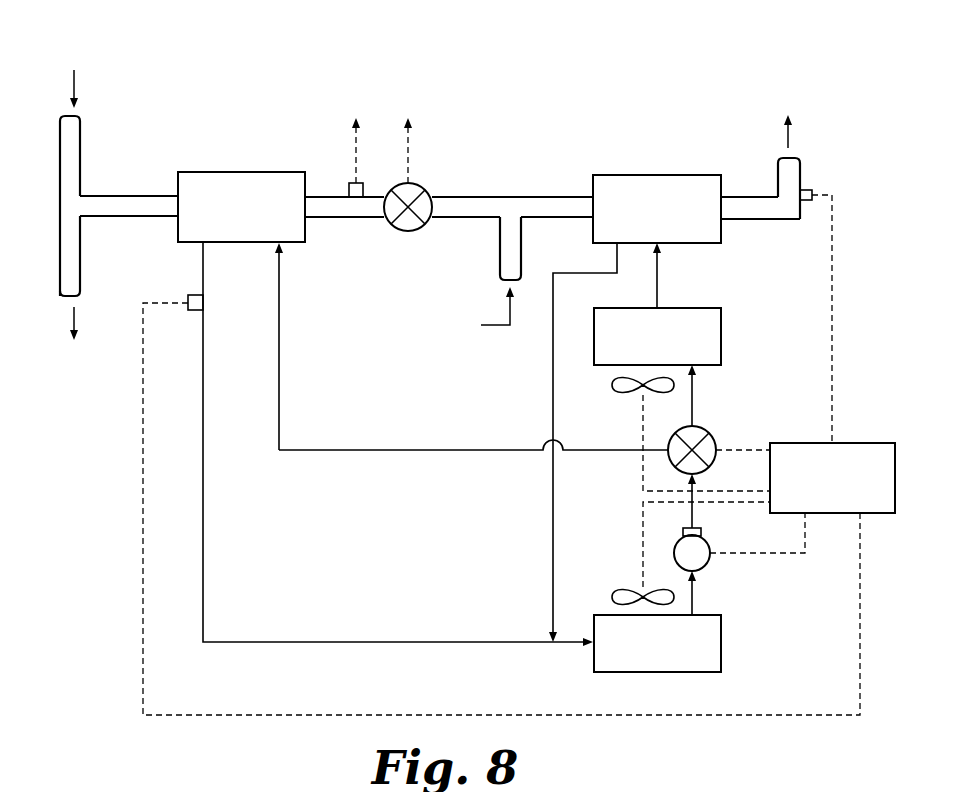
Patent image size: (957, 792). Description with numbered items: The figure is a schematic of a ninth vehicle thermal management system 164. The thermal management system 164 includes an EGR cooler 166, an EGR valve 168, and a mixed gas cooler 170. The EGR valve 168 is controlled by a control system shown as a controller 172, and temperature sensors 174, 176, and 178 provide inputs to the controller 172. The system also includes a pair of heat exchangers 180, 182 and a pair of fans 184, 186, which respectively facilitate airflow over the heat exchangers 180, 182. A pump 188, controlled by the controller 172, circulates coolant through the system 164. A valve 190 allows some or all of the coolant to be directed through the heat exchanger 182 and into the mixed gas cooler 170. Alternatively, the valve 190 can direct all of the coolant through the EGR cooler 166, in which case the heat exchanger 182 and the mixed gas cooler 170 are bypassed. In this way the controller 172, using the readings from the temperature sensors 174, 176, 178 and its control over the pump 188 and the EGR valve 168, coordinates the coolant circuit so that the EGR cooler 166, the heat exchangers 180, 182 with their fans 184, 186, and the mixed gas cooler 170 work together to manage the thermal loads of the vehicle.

The vehicle thermal management system 164 is at (646, 60).
The EGR cooler 166 is at (214, 172).
The EGR valve 168 is at (408, 232).
The mixed gas cooler 170 is at (665, 175).
The controller 172 is at (878, 443).
The temperature sensor 174 is at (349, 190).
The temperature sensor 176 is at (203, 295).
The temperature sensor 178 is at (808, 188).
The heat exchanger 180 is at (721, 648).
The heat exchanger 182 is at (721, 333).
The fan 184 is at (612, 597).
The fan 186 is at (612, 386).
The pump 188 is at (705, 567).
The valve 190 is at (712, 432).